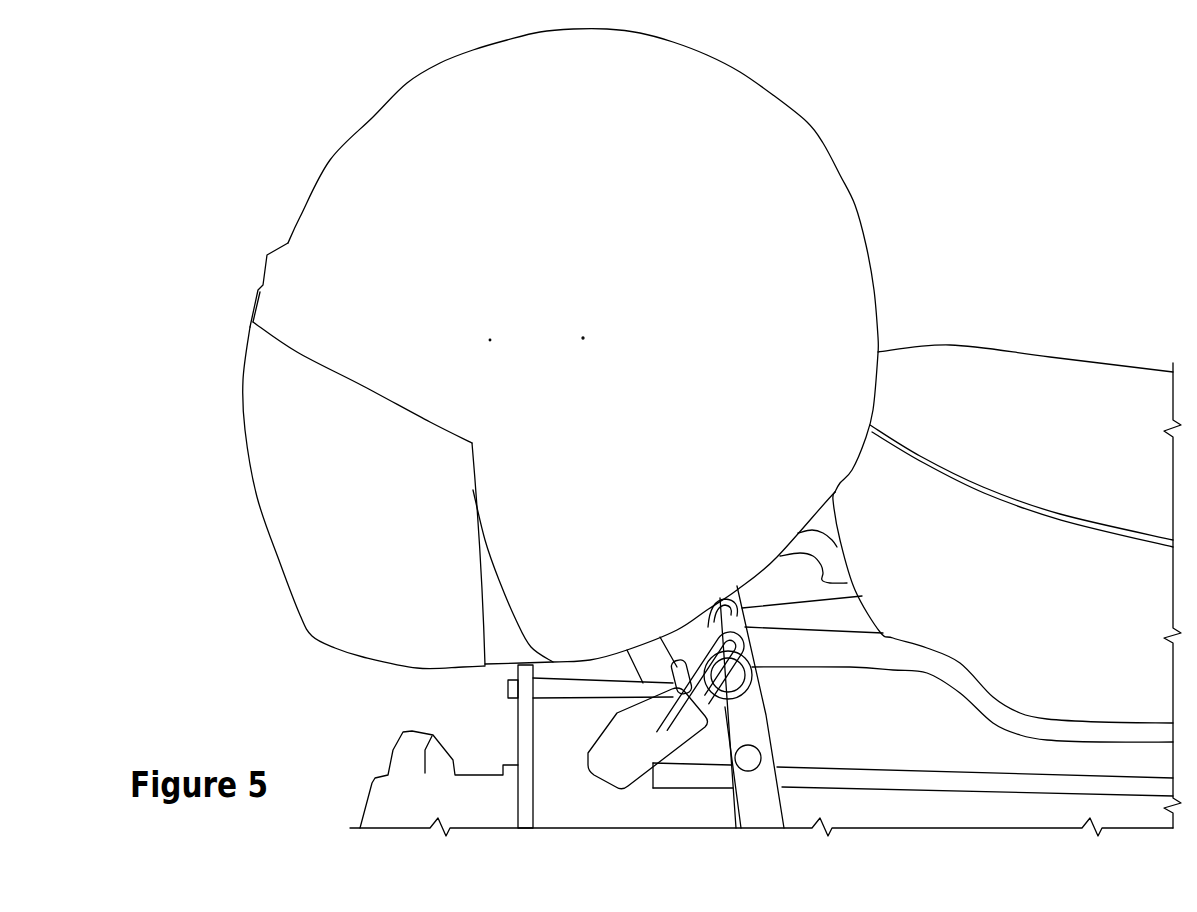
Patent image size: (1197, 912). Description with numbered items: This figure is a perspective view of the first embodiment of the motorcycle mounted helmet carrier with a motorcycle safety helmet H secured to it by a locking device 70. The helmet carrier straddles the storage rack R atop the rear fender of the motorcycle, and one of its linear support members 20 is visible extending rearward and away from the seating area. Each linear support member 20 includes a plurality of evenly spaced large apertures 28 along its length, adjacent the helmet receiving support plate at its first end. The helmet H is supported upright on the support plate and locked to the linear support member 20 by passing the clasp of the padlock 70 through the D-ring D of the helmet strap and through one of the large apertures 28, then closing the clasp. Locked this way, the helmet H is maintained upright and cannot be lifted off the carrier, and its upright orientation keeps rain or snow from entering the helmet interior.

The motorcycle safety helmet H is at (782, 178).
The storage rack R is at (860, 647).
The linear support member 20 is at (747, 723).
The large aperture 28 is at (735, 650).
The D-ring D is at (738, 685).
The locking device 70 is at (623, 767).